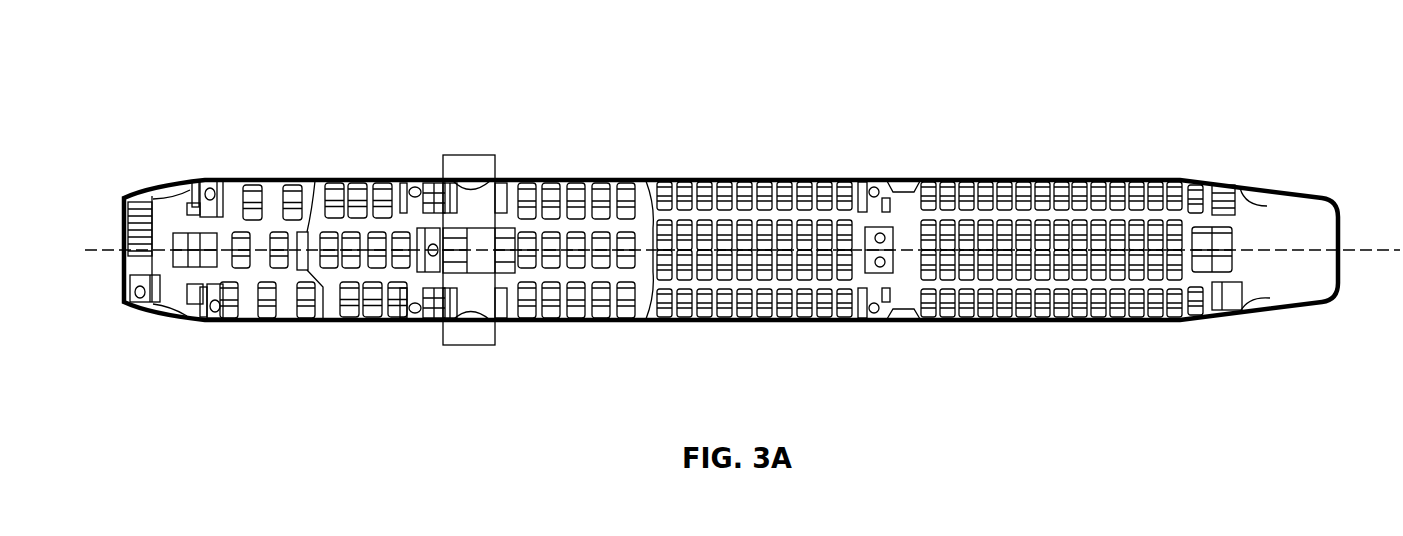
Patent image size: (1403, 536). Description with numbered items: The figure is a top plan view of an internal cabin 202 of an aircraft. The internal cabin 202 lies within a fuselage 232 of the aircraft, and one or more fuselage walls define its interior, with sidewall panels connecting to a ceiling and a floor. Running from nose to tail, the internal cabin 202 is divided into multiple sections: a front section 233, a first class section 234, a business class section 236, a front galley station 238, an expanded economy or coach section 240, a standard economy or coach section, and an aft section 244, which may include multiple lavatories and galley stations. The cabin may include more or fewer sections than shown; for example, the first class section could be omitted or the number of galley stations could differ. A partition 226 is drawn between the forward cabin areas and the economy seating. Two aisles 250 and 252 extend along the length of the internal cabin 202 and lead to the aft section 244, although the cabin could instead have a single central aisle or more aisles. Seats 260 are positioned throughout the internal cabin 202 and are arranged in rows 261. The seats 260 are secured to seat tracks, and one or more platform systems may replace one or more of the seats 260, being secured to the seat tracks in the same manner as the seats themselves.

The internal cabin 202 is at (258, 78).
The fuselage 232 is at (591, 105).
The front section 233 is at (178, 340).
The first class section 234 is at (277, 322).
The business class section 236 is at (340, 178).
The front galley station 238 is at (463, 338).
The expanded economy or coach section 240 is at (572, 322).
The bulkhead partition 226 is at (643, 180).
The seats 260 is at (822, 182).
The rows 261 is at (816, 165).
The aisle 250 is at (1058, 217).
The aisle 252 is at (1077, 283).
The aft section 244 is at (1263, 205).